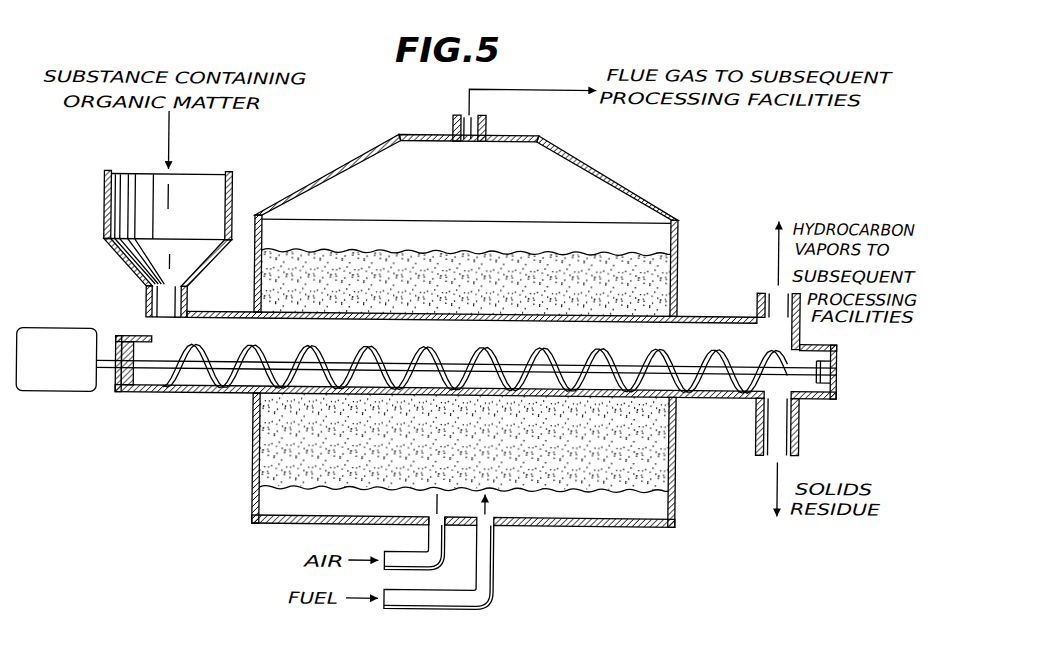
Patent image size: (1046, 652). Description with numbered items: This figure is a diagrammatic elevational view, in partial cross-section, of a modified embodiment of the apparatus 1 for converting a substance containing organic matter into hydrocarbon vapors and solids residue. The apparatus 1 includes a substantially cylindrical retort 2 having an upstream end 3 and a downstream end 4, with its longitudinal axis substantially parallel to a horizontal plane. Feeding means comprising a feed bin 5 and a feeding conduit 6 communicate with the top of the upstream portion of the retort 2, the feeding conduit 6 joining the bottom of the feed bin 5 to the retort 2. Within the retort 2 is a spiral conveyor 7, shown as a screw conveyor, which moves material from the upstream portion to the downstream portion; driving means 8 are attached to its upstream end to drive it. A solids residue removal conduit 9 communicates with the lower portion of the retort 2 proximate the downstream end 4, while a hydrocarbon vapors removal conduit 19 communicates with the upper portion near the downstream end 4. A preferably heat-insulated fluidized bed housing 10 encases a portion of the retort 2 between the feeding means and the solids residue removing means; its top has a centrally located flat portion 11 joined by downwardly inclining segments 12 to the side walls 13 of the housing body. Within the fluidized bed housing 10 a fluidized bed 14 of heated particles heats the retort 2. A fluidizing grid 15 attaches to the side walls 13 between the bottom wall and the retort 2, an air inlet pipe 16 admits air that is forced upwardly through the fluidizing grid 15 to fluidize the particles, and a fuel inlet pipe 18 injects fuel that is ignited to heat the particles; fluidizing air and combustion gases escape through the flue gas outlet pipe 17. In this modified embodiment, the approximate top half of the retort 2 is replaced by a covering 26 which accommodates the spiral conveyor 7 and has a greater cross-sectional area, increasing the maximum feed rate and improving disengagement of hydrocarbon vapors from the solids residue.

The apparatus 1 is at (472, 314).
The retort 2 is at (466, 376).
The upstream end 3 is at (117, 392).
The downstream end 4 is at (838, 387).
The feed bin 5 is at (105, 225).
The feeding conduit 6 is at (147, 304).
The spiral conveyor 7 is at (721, 394).
The driving means 8 is at (63, 395).
The solids residue removal conduit 9 is at (801, 419).
The fluidized bed housing 10 is at (684, 232).
The flat portion 11 is at (528, 130).
The downwardly inclining segments 12 is at (344, 163).
The side walls 13 is at (471, 368).
The fluidized bed 14 is at (645, 270).
The fluidizing grid 15 is at (262, 490).
The air inlet pipe 16 is at (402, 545).
The flue gas outlet pipe 17 is at (450, 118).
The fuel inlet pipe 18 is at (420, 608).
The hydrocarbon vapors removal conduit 19 is at (841, 373).
The covering 26 is at (730, 313).